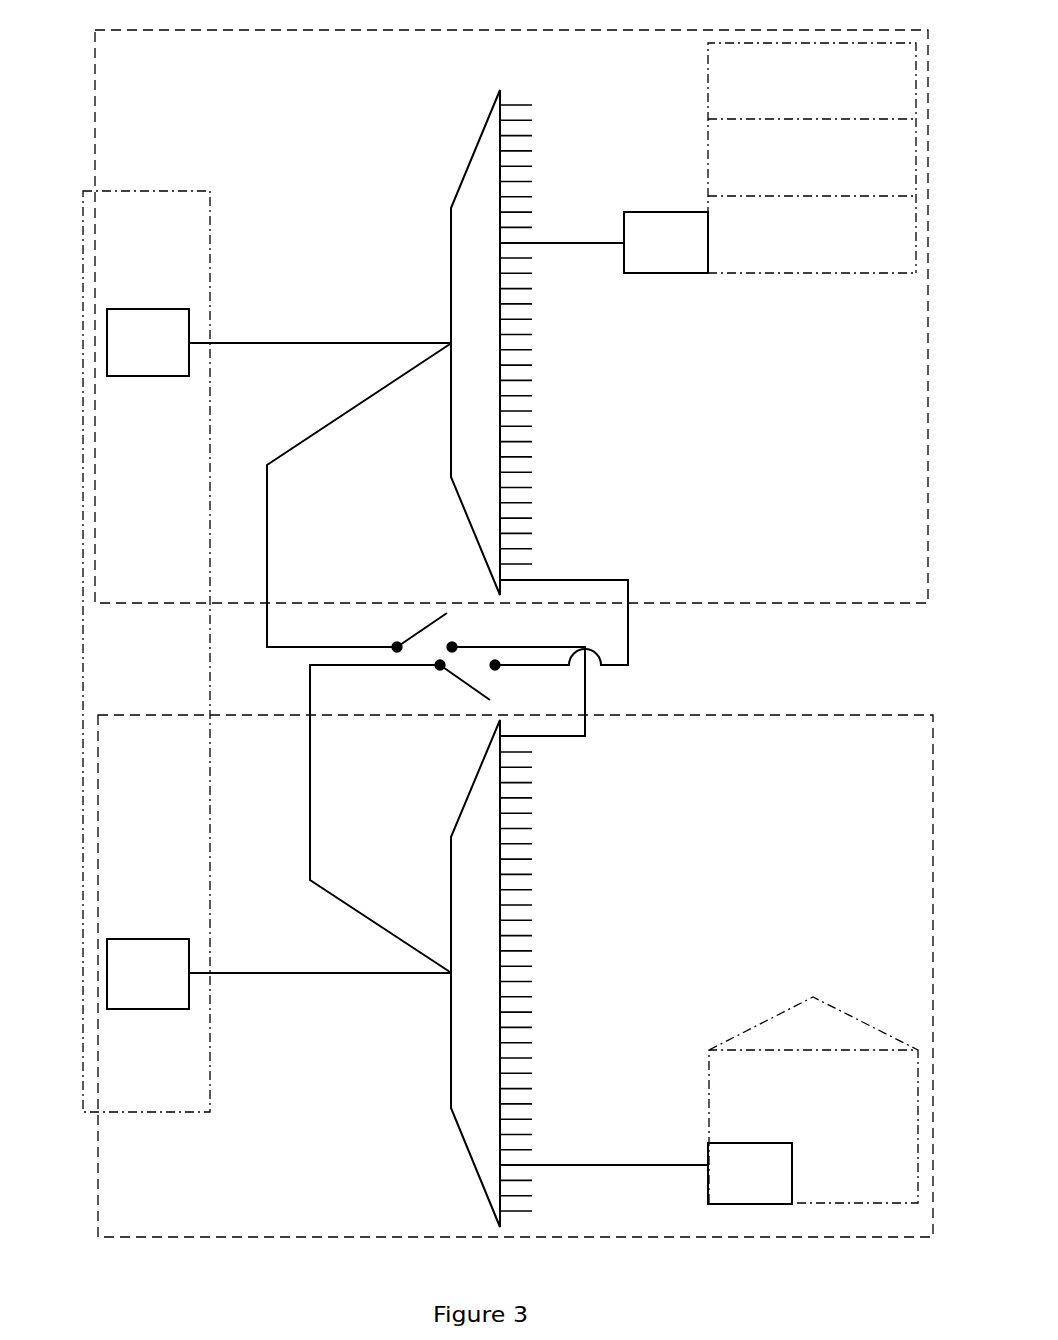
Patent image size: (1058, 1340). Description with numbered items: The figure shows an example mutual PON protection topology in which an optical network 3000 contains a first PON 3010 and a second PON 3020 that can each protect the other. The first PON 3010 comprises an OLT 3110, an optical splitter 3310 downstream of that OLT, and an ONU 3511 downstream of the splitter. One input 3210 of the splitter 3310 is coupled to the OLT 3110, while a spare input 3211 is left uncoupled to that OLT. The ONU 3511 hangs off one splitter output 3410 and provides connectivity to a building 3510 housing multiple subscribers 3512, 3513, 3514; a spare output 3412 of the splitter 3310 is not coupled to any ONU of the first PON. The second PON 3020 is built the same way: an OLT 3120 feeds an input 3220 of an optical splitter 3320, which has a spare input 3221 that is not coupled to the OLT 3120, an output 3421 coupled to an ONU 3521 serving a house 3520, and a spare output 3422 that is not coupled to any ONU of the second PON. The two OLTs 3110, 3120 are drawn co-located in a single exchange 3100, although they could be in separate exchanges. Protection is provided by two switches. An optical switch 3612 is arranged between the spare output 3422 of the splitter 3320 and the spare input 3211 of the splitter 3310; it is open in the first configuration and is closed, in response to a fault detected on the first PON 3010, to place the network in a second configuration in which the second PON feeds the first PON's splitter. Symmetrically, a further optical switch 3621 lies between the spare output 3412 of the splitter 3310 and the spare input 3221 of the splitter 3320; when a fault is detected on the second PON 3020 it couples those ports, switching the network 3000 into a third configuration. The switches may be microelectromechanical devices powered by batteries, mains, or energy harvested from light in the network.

The optical network 3000 is at (66, 62).
The first PON 3010 is at (511, 316).
The second PON 3020 is at (515, 976).
The exchange 3100 is at (146, 651).
The OLT 3110 is at (148, 342).
The OLT 3120 is at (148, 974).
The input 3210 is at (313, 342).
The spare input 3211 is at (407, 374).
The input 3220 is at (313, 972).
The spare input 3221 is at (368, 913).
The optical splitter 3310 is at (491, 342).
The optical splitter 3320 is at (491, 973).
The splitter output 3410 is at (562, 247).
The spare output 3412 is at (566, 578).
The splitter output 3421 is at (604, 1168).
The spare output 3422 is at (558, 739).
The building 3510 is at (704, 73).
The ONU 3511 is at (666, 242).
The subscriber 3512 is at (812, 84).
The subscriber 3513 is at (812, 161).
The subscriber 3514 is at (812, 238).
The house 3520 is at (813, 1100).
The ONU 3521 is at (750, 1173).
The optical switch 3612 is at (412, 637).
The further optical switch 3621 is at (457, 678).